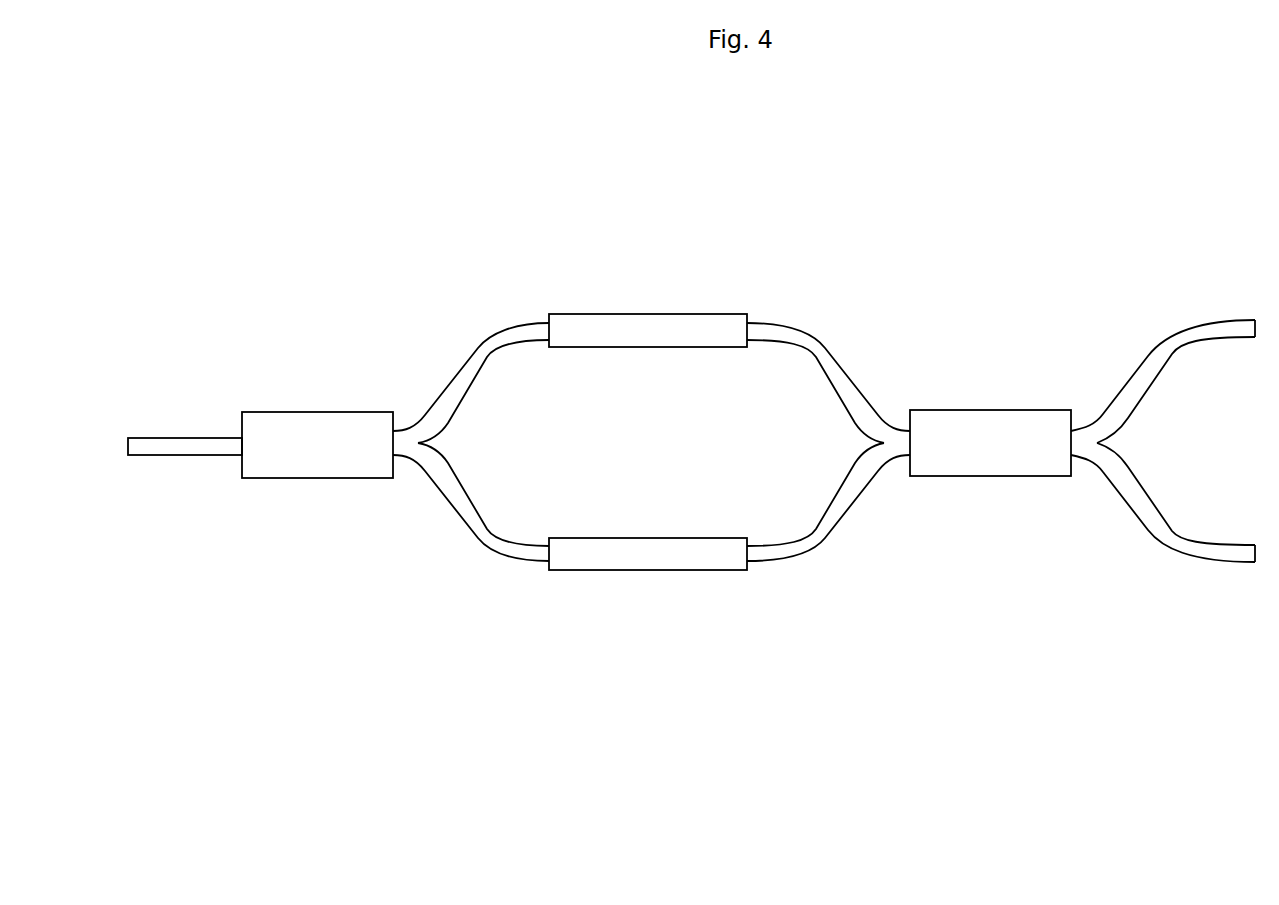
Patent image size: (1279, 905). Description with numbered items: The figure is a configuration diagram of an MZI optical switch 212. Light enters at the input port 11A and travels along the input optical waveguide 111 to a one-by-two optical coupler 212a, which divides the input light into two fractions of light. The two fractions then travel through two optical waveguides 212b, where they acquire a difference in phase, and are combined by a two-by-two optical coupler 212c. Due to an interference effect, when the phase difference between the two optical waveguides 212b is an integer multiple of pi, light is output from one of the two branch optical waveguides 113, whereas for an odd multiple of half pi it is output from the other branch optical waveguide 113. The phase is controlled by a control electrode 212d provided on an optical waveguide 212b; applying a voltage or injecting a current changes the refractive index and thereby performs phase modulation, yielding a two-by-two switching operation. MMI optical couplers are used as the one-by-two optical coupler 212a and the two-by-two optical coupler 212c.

The input port 11A is at (161, 412).
The input optical waveguide 111 is at (192, 437).
The branch optical waveguides 113 is at (1150, 353).
The MZI optical switch 212 is at (725, 203).
The 1×2 optical coupler 212a is at (318, 410).
The optical waveguides 212b is at (480, 342).
The 2×2 optical coupler 212c is at (1035, 408).
The control electrode 212d is at (720, 313).